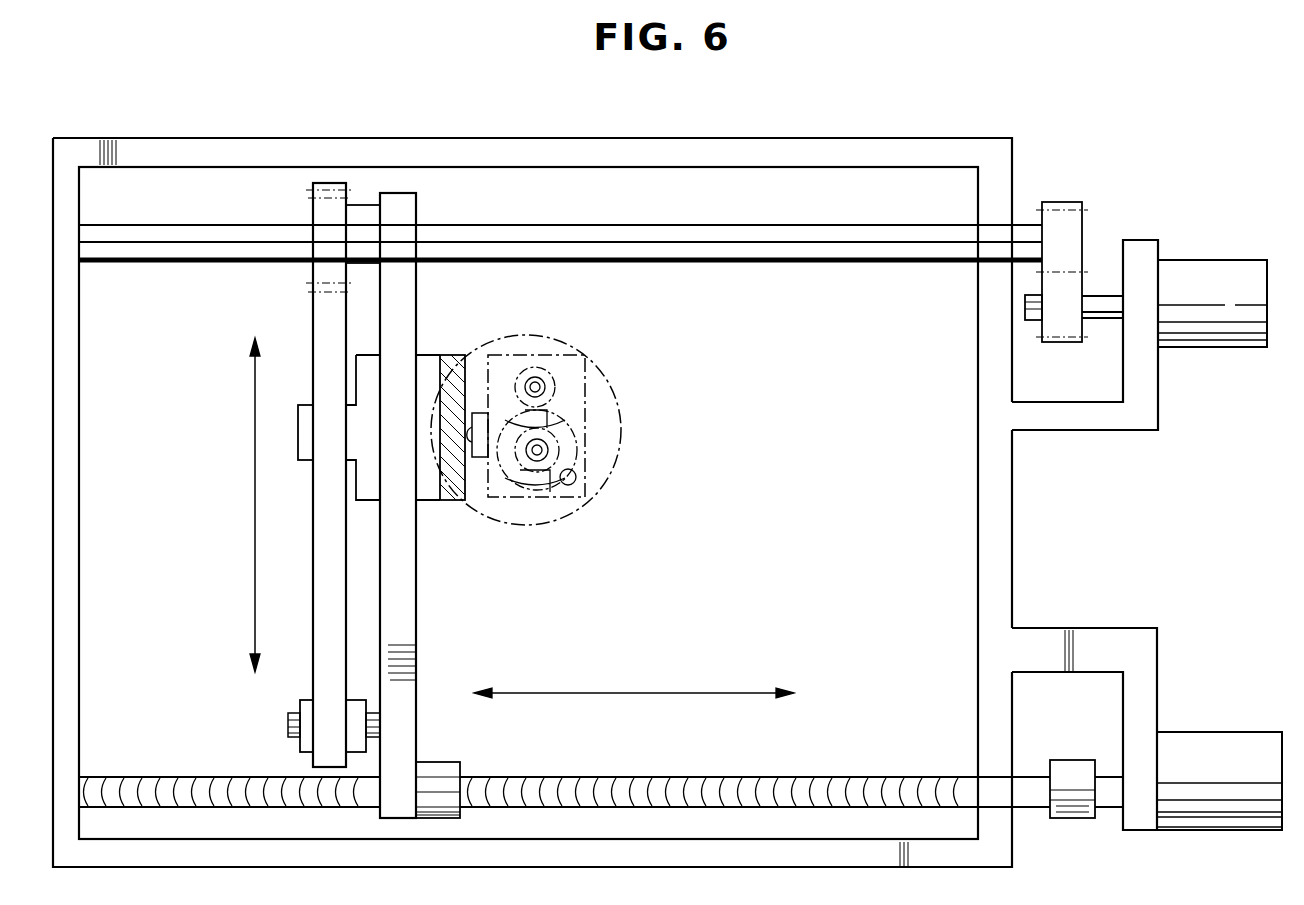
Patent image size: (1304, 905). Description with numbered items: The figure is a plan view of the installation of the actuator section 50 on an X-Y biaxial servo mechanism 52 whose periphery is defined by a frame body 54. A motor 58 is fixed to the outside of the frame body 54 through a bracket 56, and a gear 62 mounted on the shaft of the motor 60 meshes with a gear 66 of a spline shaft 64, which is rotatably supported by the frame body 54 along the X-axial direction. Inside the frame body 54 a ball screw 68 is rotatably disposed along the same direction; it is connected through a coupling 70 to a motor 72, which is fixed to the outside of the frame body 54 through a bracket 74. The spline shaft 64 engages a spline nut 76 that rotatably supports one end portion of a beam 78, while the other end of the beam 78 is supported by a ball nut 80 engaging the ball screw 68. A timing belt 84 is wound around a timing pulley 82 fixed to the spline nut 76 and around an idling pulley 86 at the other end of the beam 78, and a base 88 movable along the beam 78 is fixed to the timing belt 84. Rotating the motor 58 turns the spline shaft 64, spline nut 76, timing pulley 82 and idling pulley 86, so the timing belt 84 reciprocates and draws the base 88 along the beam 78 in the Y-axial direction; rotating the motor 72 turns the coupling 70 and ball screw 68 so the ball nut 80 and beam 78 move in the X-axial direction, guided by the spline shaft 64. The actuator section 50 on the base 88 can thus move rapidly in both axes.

The actuator section 50 is at (610, 430).
The X-Y biaxial servo mechanism 52 is at (1042, 148).
The frame body 54 is at (152, 148).
The bracket 56 is at (1140, 410).
The motor 58 is at (1215, 283).
The motor 60 is at (1105, 313).
The gear 62 is at (1060, 315).
The spline shaft 64 is at (832, 244).
The gear 66 is at (1070, 240).
The ball screw 68 is at (875, 778).
The coupling 70 is at (1075, 810).
The motor 72 is at (1225, 745).
The bracket 74 is at (1130, 648).
The spline nut 76 is at (363, 220).
The beam 78 is at (400, 632).
The ball nut 80 is at (455, 772).
The timing pulley 82 is at (326, 214).
The timing belt 84 is at (325, 322).
The idling pulley 86 is at (300, 745).
The base 88 is at (455, 492).